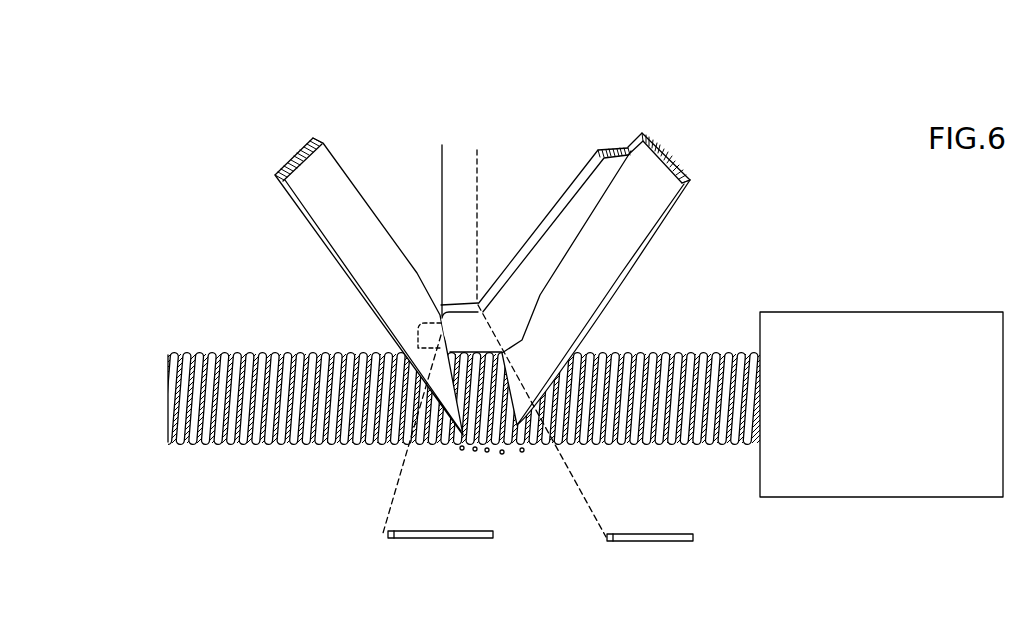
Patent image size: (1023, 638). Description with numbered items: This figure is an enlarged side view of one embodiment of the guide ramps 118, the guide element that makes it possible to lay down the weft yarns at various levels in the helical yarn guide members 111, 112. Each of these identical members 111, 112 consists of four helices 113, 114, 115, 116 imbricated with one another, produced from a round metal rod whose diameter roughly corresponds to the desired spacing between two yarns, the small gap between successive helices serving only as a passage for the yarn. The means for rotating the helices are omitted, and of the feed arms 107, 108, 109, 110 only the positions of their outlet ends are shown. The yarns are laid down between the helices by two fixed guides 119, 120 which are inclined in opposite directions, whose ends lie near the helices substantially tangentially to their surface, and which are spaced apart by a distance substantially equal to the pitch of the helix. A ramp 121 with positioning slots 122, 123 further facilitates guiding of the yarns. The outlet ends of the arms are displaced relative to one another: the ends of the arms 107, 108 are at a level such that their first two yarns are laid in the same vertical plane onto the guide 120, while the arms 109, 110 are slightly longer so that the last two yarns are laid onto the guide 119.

The feed arm 107 is at (654, 565).
The feed arm 108 is at (658, 547).
The feed arm 109 is at (432, 562).
The feed arm 110 is at (426, 543).
The helical yarn guide member 111 is at (420, 358).
The helical yarn guide member 112 is at (150, 357).
The helix 113 is at (460, 449).
The helix 114 is at (501, 454).
The helix 115 is at (486, 452).
The helix 116 is at (473, 451).
The guide ramp 118 is at (536, 228).
The fixed guide 119 is at (337, 194).
The fixed guide 120 is at (663, 174).
The ramp 121 is at (572, 197).
The positioning slot 122 is at (480, 302).
The positioning slot 123 is at (439, 316).